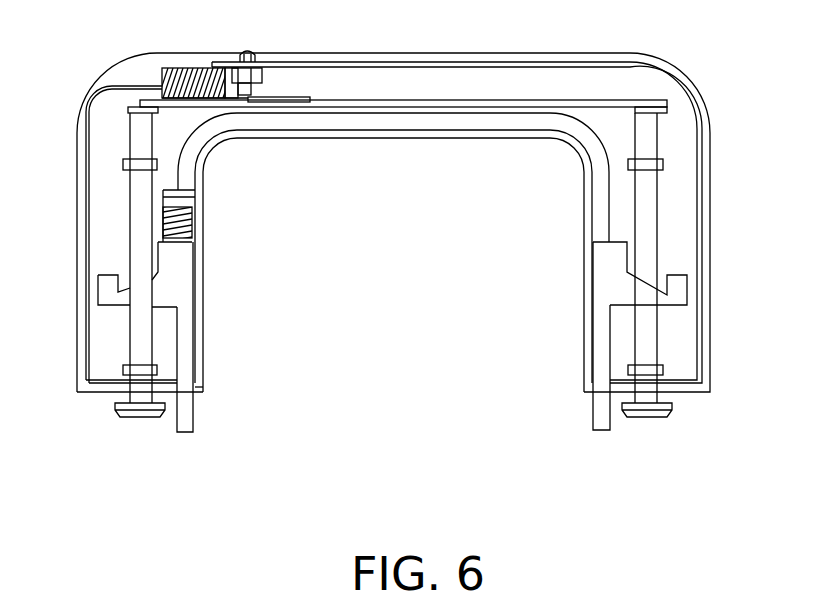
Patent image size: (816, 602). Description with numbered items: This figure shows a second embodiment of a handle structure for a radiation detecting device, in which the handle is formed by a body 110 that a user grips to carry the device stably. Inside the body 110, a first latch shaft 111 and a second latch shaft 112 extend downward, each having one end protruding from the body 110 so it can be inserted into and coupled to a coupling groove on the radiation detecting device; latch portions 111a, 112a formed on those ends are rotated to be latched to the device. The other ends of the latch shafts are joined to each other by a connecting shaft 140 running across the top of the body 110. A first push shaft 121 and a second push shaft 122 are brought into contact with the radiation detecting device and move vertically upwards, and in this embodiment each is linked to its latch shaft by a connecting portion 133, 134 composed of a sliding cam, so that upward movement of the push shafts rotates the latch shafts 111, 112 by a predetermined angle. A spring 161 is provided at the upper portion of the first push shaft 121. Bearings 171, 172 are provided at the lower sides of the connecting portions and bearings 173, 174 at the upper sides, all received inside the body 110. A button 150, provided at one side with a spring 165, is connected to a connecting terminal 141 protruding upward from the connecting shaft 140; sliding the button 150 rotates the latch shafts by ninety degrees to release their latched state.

The body 110 is at (590, 53).
The first latch shaft 111 is at (131, 232).
The latch portion 111a is at (137, 417).
The second latch shaft 112 is at (653, 327).
The latch portion 112a is at (645, 417).
The first push shaft 121 is at (188, 408).
The second push shaft 122 is at (600, 407).
The connecting portion 133 is at (166, 286).
The connecting portion 134 is at (603, 283).
The connecting shaft 140 is at (418, 100).
The connecting terminal 141 is at (256, 88).
The button 150 is at (247, 52).
The spring 161 is at (193, 222).
The spring 165 is at (188, 67).
The bearing 171 is at (125, 370).
The bearing 172 is at (663, 370).
The bearing 173 is at (123, 164).
The bearing 174 is at (663, 165).